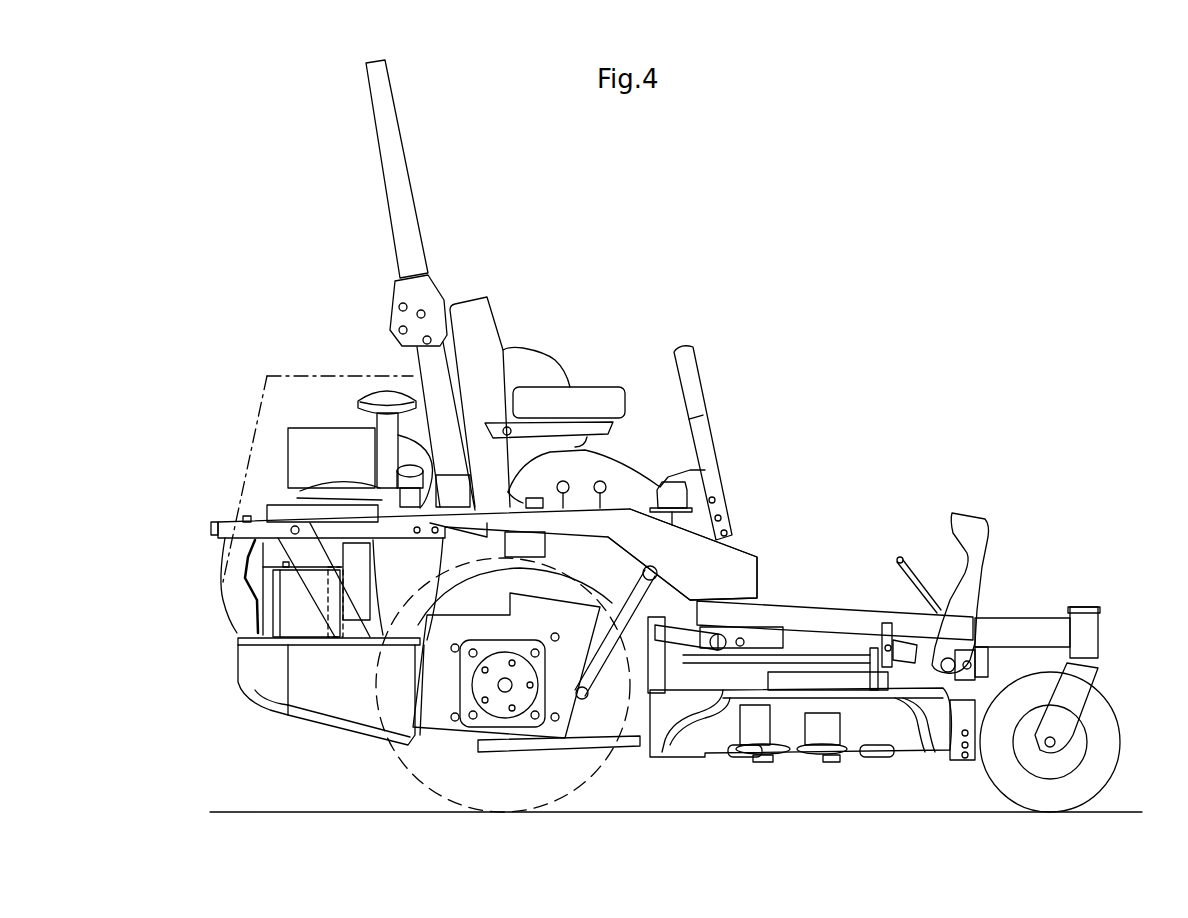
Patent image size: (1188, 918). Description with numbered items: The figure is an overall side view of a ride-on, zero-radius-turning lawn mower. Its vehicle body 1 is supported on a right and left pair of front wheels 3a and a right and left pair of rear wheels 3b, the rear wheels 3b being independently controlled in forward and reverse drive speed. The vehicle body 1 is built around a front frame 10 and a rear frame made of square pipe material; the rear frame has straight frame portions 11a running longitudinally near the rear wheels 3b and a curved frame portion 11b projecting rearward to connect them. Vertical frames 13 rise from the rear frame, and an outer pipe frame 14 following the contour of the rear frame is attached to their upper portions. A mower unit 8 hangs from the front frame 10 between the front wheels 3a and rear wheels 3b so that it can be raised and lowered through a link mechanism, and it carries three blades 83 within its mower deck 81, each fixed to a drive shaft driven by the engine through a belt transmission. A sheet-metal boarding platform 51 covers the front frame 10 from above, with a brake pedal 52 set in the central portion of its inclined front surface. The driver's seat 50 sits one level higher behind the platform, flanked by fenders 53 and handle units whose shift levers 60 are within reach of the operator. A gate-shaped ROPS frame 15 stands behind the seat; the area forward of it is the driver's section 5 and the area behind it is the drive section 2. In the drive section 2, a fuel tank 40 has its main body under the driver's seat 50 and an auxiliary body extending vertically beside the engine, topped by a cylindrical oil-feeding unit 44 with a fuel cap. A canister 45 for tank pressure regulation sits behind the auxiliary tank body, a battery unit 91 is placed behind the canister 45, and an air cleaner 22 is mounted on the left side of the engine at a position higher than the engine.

The vehicle body 1 is at (1115, 574).
The drive section 2 is at (295, 361).
The front wheels 3a is at (1115, 743).
The rear wheels 3b is at (383, 767).
The driver's section 5 is at (634, 314).
The mower unit 8 is at (986, 676).
The front frame 10 is at (1040, 623).
The straight frame portions 11a is at (332, 688).
The curved frame portion 11b is at (238, 663).
The vertical frames 13 is at (263, 557).
The outer pipe frame 14 is at (240, 522).
The ROPS frame 15 is at (398, 150).
The air cleaner 22 is at (297, 450).
The fuel tank 40 is at (415, 570).
The oil-feeding unit 44 is at (383, 474).
The canister 45 is at (357, 590).
The driver's seat 50 is at (482, 317).
The boarding platform 51 is at (787, 600).
The brake pedal 52 is at (895, 563).
The fenders 53 is at (713, 565).
The shift levers 60 is at (690, 378).
The mower deck 81 is at (815, 678).
The blades 83 is at (738, 752).
The battery unit 91 is at (288, 605).